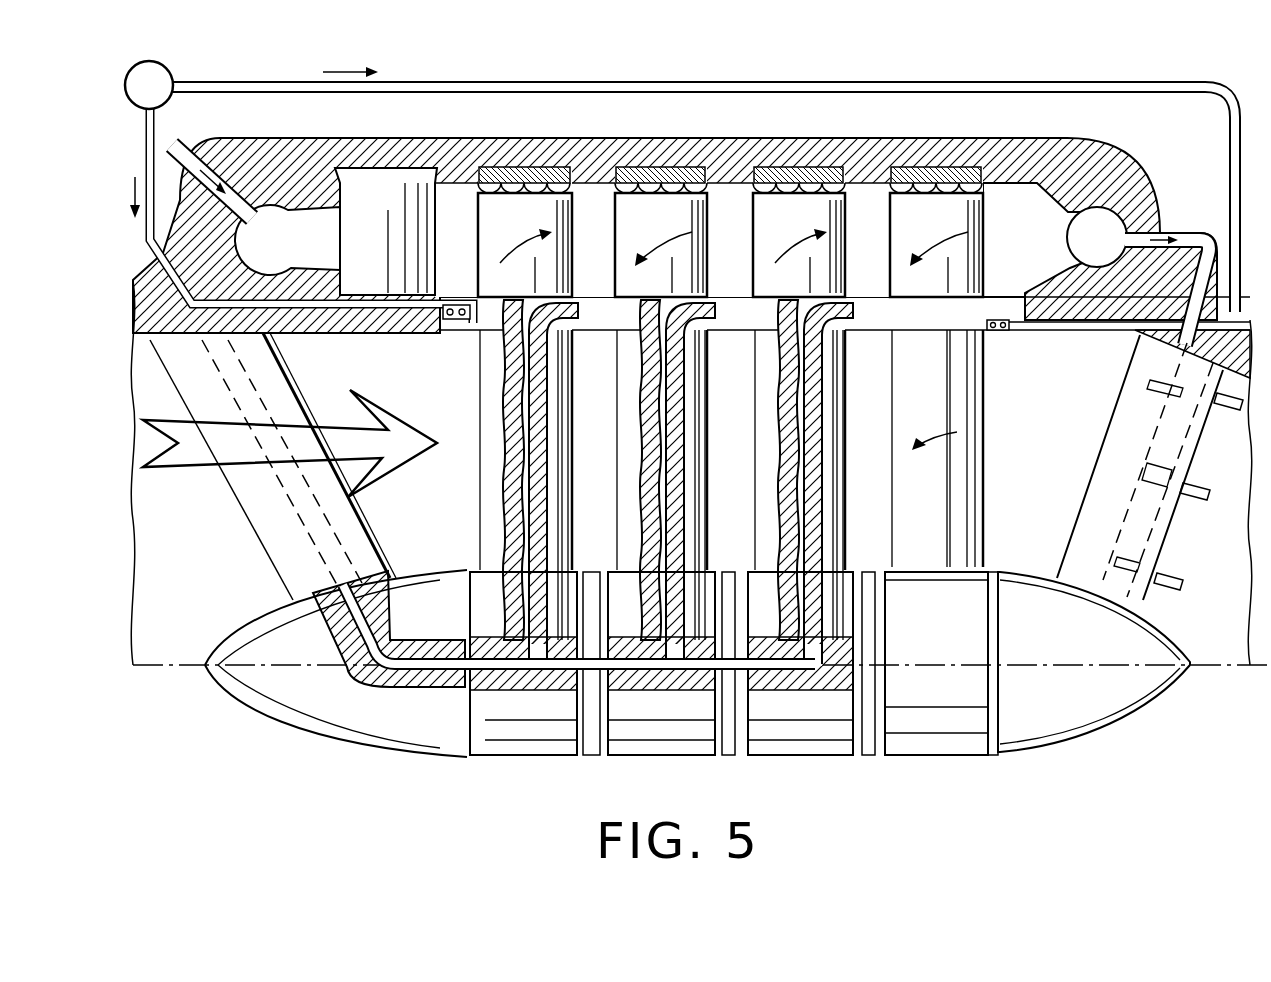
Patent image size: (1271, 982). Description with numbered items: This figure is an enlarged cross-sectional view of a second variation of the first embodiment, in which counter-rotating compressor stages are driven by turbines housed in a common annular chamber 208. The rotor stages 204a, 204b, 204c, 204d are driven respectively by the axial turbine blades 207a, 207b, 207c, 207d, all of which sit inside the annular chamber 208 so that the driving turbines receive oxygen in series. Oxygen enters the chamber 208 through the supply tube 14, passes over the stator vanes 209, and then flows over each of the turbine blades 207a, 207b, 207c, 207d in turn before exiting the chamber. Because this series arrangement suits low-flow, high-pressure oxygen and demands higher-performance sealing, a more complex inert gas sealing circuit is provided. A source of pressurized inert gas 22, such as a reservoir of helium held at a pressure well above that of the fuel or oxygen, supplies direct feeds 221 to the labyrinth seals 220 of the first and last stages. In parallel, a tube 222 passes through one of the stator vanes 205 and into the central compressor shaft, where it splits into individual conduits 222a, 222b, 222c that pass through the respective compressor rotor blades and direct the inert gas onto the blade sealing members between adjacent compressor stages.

The source of pressurized inert gas 22 is at (138, 97).
The supply tube 14 is at (195, 150).
The annular chamber 208 is at (283, 222).
The stator vanes 209 is at (370, 200).
The axial turbine blade 207a is at (513, 213).
The axial turbine blade 207b is at (648, 213).
The axial turbine blade 207c is at (790, 213).
The axial turbine blade 207d is at (920, 213).
The direct feeds 221 is at (1232, 145).
The labyrinth seals 220 is at (438, 330).
The rotor stage 204a is at (497, 377).
The rotor stage 204b is at (627, 473).
The rotor stage 204c is at (850, 403).
The rotor stage 204d is at (955, 465).
The tube 222 is at (285, 490).
The stator vane 205 is at (283, 548).
The individual conduit 222a is at (542, 686).
The individual conduit 222b is at (693, 660).
The individual conduit 222c is at (818, 668).